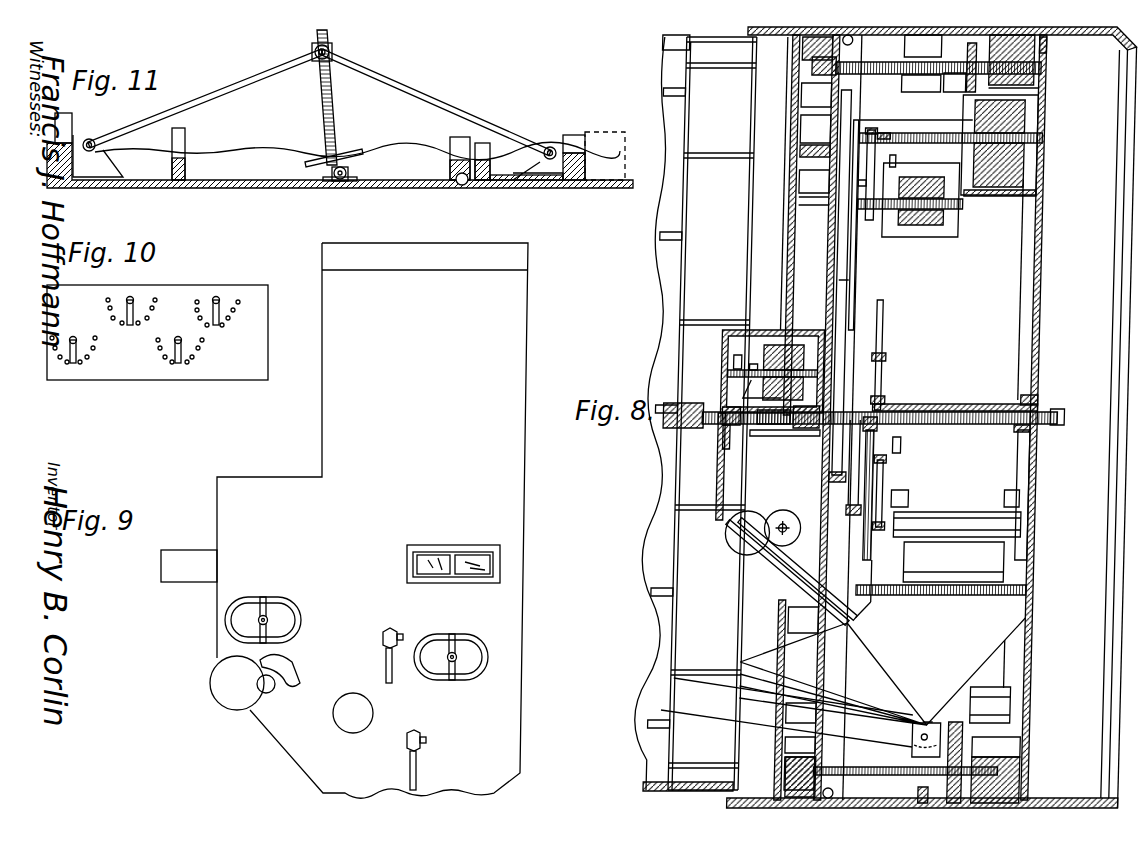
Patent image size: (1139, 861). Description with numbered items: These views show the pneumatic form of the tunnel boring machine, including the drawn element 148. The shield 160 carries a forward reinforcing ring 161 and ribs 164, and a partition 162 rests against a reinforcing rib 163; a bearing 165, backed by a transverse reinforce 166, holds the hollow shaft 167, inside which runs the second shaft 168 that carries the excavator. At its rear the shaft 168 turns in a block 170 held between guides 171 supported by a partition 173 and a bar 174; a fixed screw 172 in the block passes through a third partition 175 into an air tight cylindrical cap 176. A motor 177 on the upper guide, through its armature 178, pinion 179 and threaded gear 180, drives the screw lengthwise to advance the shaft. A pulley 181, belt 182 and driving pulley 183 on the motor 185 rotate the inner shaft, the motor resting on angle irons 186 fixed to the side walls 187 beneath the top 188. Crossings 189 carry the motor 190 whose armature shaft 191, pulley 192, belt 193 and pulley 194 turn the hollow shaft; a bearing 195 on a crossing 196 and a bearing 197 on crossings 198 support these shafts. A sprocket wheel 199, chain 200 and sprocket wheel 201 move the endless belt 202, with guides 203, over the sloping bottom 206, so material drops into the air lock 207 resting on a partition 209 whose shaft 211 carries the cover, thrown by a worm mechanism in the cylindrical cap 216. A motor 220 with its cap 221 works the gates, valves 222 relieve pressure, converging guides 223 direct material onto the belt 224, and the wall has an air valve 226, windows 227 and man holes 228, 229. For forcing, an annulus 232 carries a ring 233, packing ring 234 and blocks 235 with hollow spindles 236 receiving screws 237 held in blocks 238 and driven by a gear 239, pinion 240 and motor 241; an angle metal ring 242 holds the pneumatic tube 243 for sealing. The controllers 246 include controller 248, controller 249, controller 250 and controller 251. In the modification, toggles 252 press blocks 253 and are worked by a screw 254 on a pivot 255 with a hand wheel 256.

In FIG. 8, the drawers 148 is at (695, 412).
In FIG. 11, the shield 160 is at (272, 184).
In FIG. 8, the shield 160 is at (1110, 34).
In FIG. 8, the reinforcing ring 161 is at (1127, 168).
In FIG. 8, the partition 162 is at (1046, 272).
In FIG. 11, the reinforcing rib 163 is at (68, 138).
In FIG. 8, the reinforcing rib 163 is at (1045, 51).
In FIG. 11, the ribs 164 is at (186, 163).
In FIG. 8, the ribs 164 is at (937, 792).
In FIG. 8, the bearing 165 is at (1028, 398).
In FIG. 8, the reinforce 166 is at (1034, 435).
In FIG. 8, the hollow shaft 167 is at (980, 409).
In FIG. 8, the second shaft 168 is at (1073, 418).
In FIG. 8, the block 170 is at (824, 430).
In FIG. 8, the guides 171 is at (798, 437).
In FIG. 8, the screw 172 is at (783, 430).
In FIG. 8, the partition 173 is at (842, 258).
In FIG. 8, the bar 174 is at (748, 430).
In FIG. 8, the third partition 175 is at (736, 382).
In FIG. 9, the cylindrical cap 176 is at (189, 566).
In FIG. 8, the cylindrical cap 176 is at (718, 431).
In FIG. 8, the motor 177 is at (776, 372).
In FIG. 8, the armature 178 is at (761, 376).
In FIG. 8, the pinion 179 is at (737, 356).
In FIG. 8, the gear 180 is at (733, 446).
In FIG. 8, the pulley 181 is at (851, 485).
In FIG. 8, the belt 182 is at (845, 278).
In FIG. 8, the driving pulley 183 is at (858, 186).
In FIG. 8, the motor 185 is at (910, 193).
In FIG. 8, the angle irons 186 is at (934, 248).
In FIG. 9, the side walls 187 is at (372, 520).
In FIG. 8, the side walls 187 is at (912, 417).
In FIG. 9, the top 188 is at (425, 260).
In FIG. 8, the top 188 is at (917, 109).
In FIG. 8, the crossings 189 is at (976, 195).
In FIG. 8, the motor 190 is at (978, 115).
In FIG. 8, the armature shaft 191 is at (926, 140).
In FIG. 8, the pulley 192 is at (863, 170).
In FIG. 8, the belt 193 is at (878, 225).
In FIG. 8, the pulley 194 is at (929, 311).
In FIG. 8, the bearing 195 is at (891, 135).
In FIG. 8, the crossing 196 is at (894, 164).
In FIG. 8, the bearing 197 is at (896, 401).
In FIG. 8, the crossings 198 is at (912, 445).
In FIG. 8, the sprocket wheel 199 is at (893, 355).
In FIG. 8, the chain 200 is at (895, 493).
In FIG. 8, the sprocket wheel 201 is at (887, 531).
In FIG. 8, the endless belt 202 is at (995, 514).
In FIG. 8, the guides 203 is at (918, 508).
In FIG. 8, the sloping bottom 206 is at (1020, 657).
In FIG. 8, the air lock 207 is at (938, 572).
In FIG. 8, the partition 209 is at (935, 671).
In FIG. 8, the shaft 211 is at (990, 585).
In FIG. 9, the cylindrical cap 216 is at (353, 713).
In FIG. 9, the motor 220 is at (290, 666).
In FIG. 8, the motor 220 is at (782, 528).
In FIG. 9, the cap 221 is at (242, 683).
In FIG. 8, the cap 221 is at (754, 550).
In FIG. 9, the valves 222 is at (421, 737).
In FIG. 8, the converging guides 223 is at (842, 671).
In FIG. 8, the belt 224 is at (724, 690).
In FIG. 9, the air valve 226 is at (396, 631).
In FIG. 9, the windows 227 is at (455, 553).
In FIG. 9, the man hole 228 is at (263, 620).
In FIG. 9, the man hole 229 is at (451, 657).
In FIG. 11, the annulus 232 is at (495, 161).
In FIG. 8, the annulus 232 is at (806, 183).
In FIG. 11, the ring 233 is at (585, 178).
In FIG. 8, the ring 233 is at (797, 43).
In FIG. 11, the packing ring 234 is at (584, 157).
In FIG. 8, the packing ring 234 is at (797, 56).
In FIG. 8, the blocks 235 is at (812, 417).
In FIG. 8, the hollow spindle 236 is at (890, 76).
In FIG. 8, the screw 237 is at (922, 401).
In FIG. 8, the block 238 is at (1037, 83).
In FIG. 8, the gear 239 is at (953, 423).
In FIG. 8, the pinion 240 is at (963, 712).
In FIG. 8, the motor 241 is at (1040, 96).
In FIG. 11, the angle metal ring 242 is at (452, 168).
In FIG. 8, the angle metal ring 242 is at (850, 54).
In FIG. 11, the pneumatic tube 243 is at (455, 181).
In FIG. 8, the pneumatic tube 243 is at (855, 41).
In FIG. 10, the controllers 246 is at (157, 332).
In FIG. 10, the controller 248 is at (73, 342).
In FIG. 10, the controller 249 is at (138, 331).
In FIG. 10, the controller 250 is at (180, 343).
In FIG. 10, the controller 251 is at (216, 328).
In FIG. 11, the toggles 252 is at (250, 85).
In FIG. 11, the blocks 253 is at (329, 157).
In FIG. 11, the screw 254 is at (332, 110).
In FIG. 11, the pivot 255 is at (332, 173).
In FIG. 11, the hand wheel 256 is at (333, 160).